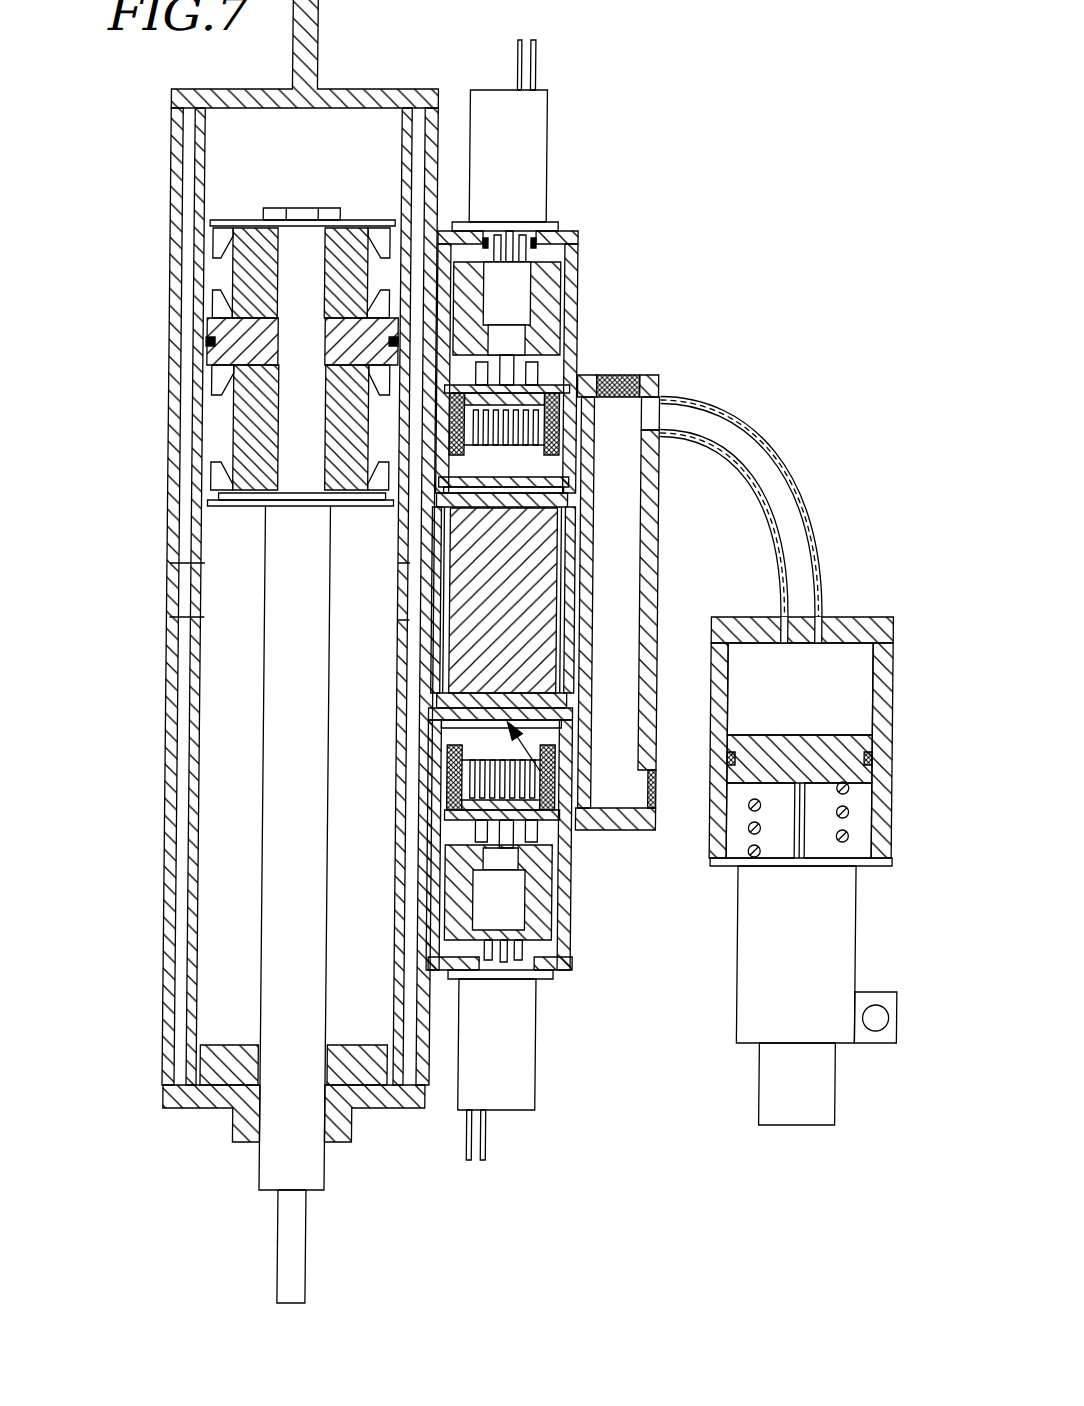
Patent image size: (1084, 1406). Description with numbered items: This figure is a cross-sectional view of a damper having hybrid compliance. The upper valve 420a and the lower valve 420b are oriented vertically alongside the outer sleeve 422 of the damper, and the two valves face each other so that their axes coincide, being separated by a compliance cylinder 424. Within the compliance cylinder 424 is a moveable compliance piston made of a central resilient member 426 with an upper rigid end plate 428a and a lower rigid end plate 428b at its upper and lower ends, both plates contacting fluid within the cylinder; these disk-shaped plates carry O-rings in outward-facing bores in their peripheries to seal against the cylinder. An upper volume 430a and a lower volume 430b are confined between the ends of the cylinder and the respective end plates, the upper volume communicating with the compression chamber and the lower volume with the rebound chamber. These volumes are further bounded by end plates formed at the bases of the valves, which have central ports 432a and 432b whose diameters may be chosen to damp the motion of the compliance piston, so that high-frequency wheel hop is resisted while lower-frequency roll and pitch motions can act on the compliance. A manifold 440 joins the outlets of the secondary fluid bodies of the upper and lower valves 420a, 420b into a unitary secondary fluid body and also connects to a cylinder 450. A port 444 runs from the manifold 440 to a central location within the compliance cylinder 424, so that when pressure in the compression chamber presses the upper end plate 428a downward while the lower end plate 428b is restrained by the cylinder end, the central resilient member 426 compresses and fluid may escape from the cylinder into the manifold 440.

The upper valve 420a is at (580, 194).
The lower valve 420b is at (567, 1010).
The outer sleeve 422 is at (430, 1052).
The compliance cylinder 424 is at (437, 710).
The central resilient member 426 is at (515, 546).
The upper rigid end plate 428a is at (458, 495).
The lower rigid end plate 428b is at (560, 732).
The upper volume 430a is at (545, 472).
The lower volume 430b is at (577, 775).
The central port 432a is at (523, 467).
The central port 432b is at (578, 835).
The manifold 440 is at (652, 569).
The port 444 is at (589, 603).
The cylinder 450 is at (807, 690).